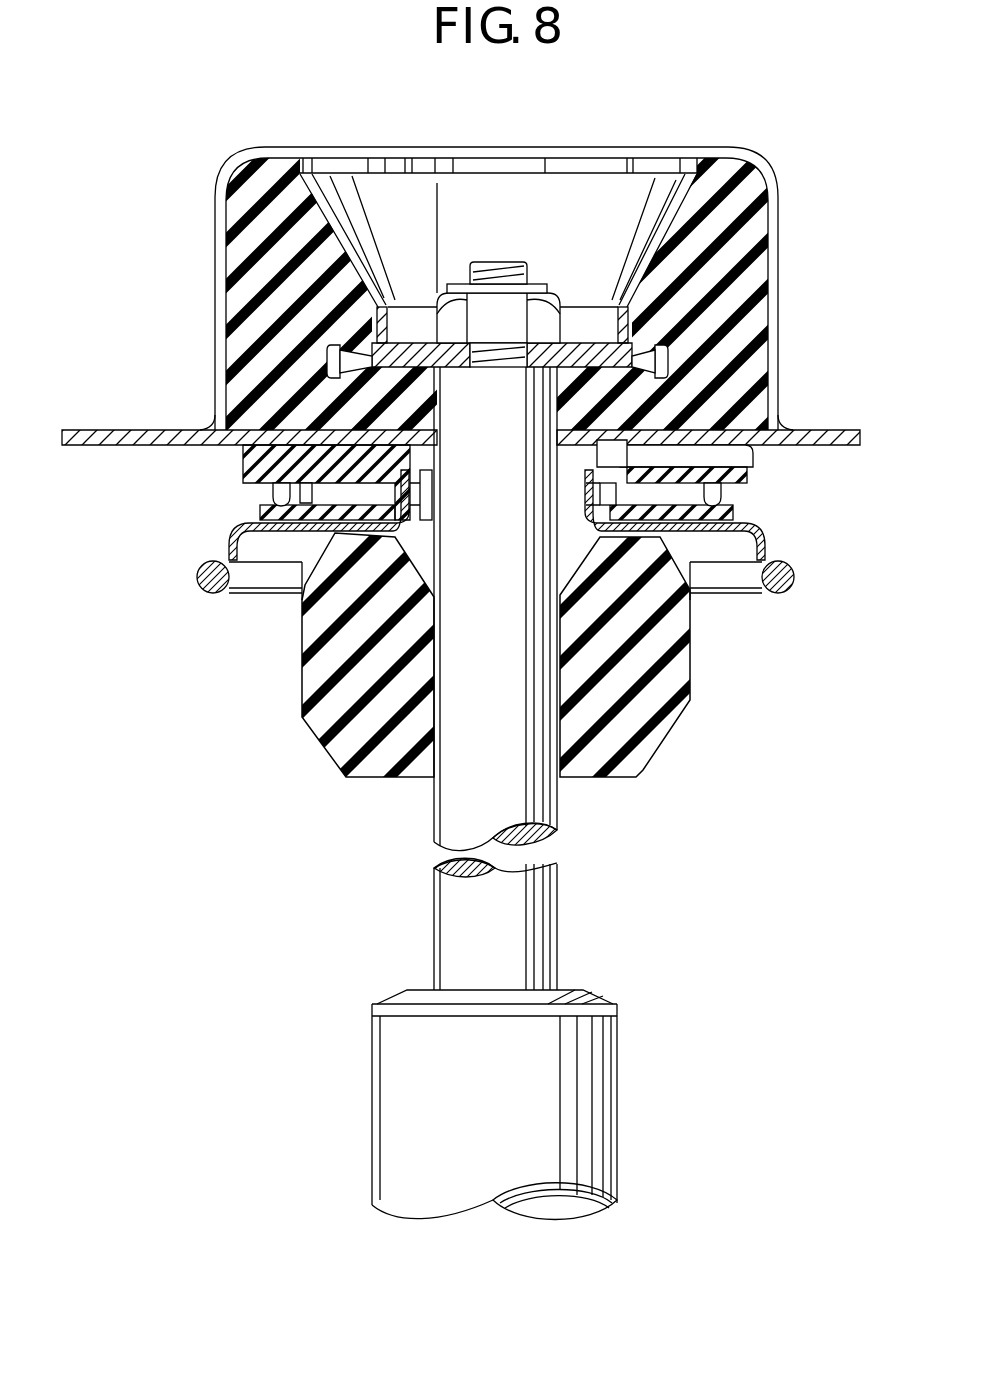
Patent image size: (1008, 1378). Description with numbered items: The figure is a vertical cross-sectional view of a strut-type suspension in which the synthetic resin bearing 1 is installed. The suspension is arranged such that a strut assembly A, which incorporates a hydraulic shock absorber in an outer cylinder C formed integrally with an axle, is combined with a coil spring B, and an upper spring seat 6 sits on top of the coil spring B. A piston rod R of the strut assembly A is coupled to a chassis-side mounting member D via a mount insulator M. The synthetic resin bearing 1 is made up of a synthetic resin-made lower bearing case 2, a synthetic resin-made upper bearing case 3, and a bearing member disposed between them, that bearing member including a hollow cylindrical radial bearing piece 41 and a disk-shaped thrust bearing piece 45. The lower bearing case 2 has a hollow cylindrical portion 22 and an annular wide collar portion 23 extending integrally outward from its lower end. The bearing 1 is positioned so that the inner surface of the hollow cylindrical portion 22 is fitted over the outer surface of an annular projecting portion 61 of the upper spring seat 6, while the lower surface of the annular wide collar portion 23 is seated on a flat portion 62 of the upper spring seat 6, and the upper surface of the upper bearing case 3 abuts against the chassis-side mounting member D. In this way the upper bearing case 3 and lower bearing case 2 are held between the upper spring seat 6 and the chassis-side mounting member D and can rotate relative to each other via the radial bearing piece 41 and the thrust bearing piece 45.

The mount insulator M is at (232, 262).
The chassis-side mounting member D is at (156, 438).
The upper bearing case 3 is at (258, 472).
The synthetic resin bearing 1 is at (755, 465).
The hollow cylindrical radial bearing piece 41 is at (600, 490).
The annular projecting portion 61 is at (432, 493).
The flat portion 62 is at (258, 525).
The upper spring seat 6 is at (762, 535).
The coil spring B is at (781, 597).
The lower bearing case 2 is at (297, 533).
The disk-shaped thrust bearing piece 45 is at (702, 507).
The hollow cylindrical portion 22 is at (407, 514).
The annular wide collar portion 23 is at (635, 530).
The piston rod R is at (513, 807).
The strut assembly A is at (607, 999).
The outer cylinder C is at (390, 1067).